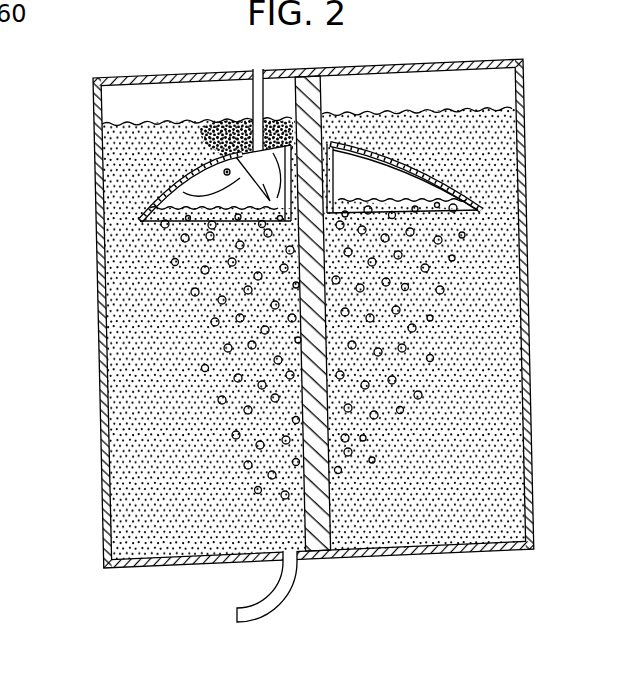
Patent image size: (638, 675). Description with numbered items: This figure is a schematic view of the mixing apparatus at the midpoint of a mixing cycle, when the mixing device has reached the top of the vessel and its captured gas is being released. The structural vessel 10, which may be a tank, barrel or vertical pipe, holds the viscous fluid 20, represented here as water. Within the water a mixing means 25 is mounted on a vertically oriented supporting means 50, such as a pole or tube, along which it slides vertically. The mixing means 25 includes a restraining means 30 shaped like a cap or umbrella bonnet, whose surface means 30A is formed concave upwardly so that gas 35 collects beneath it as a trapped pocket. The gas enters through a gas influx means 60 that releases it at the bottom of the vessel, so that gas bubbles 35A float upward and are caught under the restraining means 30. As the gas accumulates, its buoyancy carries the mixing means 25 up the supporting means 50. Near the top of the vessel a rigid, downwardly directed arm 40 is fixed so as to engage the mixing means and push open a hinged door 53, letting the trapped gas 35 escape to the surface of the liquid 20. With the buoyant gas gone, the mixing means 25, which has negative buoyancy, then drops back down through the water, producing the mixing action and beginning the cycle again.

The vessel 10 is at (98, 211).
The viscous fluid 20 is at (338, 188).
The mixing means 25 is at (436, 145).
The restraining means 30 is at (363, 148).
The surface means 30A is at (434, 185).
The gas 35 is at (403, 183).
The gas bubbles 35A is at (408, 290).
The arm 40 is at (253, 94).
The supporting means 50 is at (332, 523).
The hinged door 53 is at (178, 193).
The gas influx means 60 is at (272, 617).